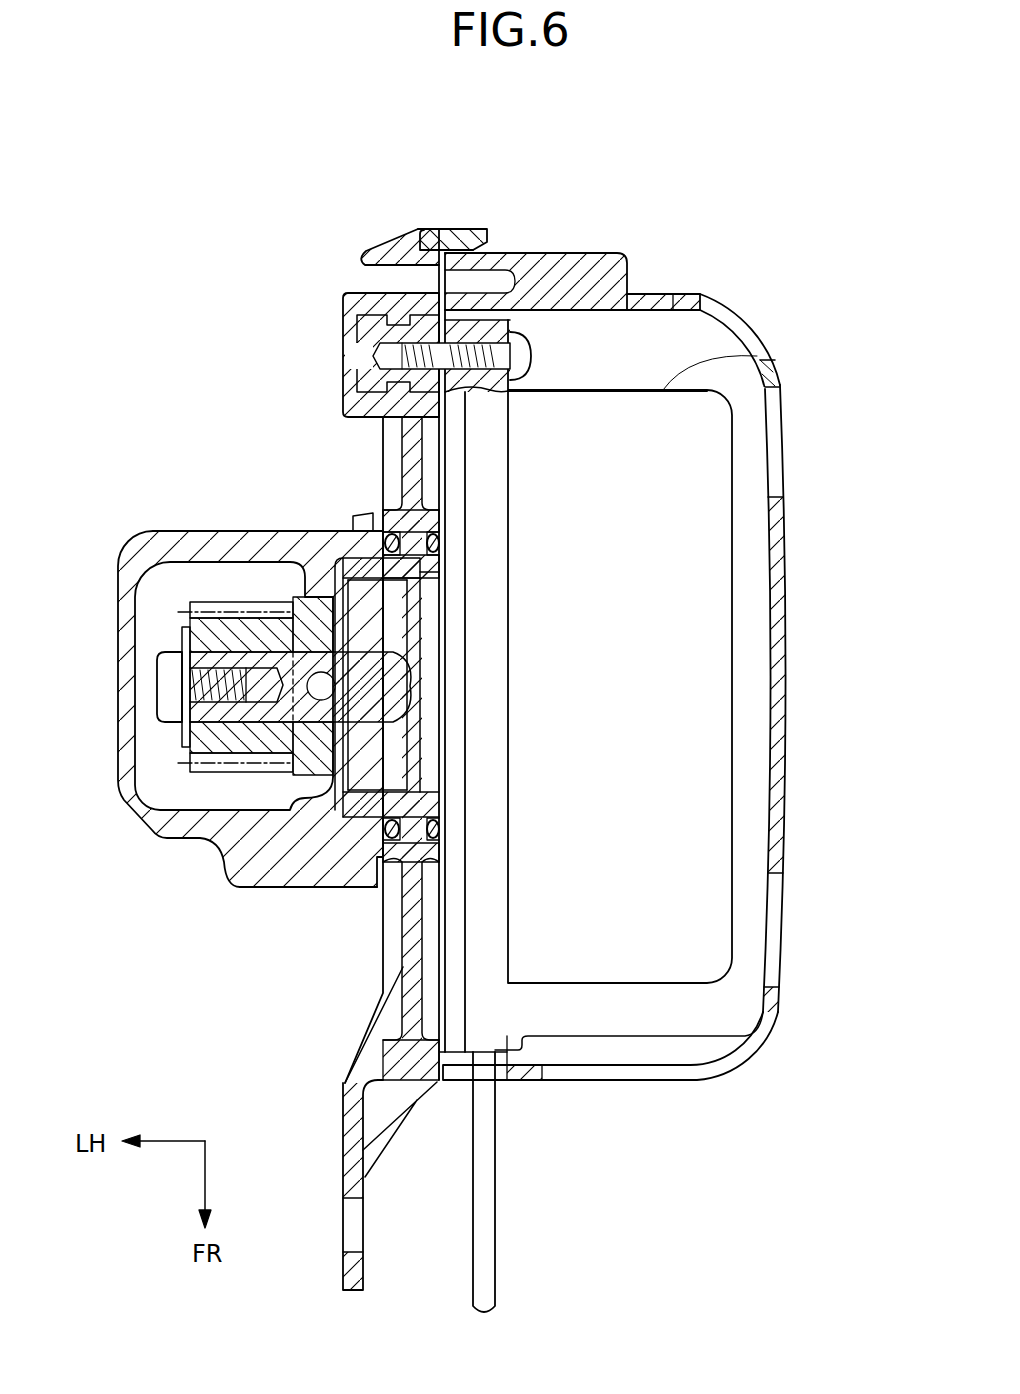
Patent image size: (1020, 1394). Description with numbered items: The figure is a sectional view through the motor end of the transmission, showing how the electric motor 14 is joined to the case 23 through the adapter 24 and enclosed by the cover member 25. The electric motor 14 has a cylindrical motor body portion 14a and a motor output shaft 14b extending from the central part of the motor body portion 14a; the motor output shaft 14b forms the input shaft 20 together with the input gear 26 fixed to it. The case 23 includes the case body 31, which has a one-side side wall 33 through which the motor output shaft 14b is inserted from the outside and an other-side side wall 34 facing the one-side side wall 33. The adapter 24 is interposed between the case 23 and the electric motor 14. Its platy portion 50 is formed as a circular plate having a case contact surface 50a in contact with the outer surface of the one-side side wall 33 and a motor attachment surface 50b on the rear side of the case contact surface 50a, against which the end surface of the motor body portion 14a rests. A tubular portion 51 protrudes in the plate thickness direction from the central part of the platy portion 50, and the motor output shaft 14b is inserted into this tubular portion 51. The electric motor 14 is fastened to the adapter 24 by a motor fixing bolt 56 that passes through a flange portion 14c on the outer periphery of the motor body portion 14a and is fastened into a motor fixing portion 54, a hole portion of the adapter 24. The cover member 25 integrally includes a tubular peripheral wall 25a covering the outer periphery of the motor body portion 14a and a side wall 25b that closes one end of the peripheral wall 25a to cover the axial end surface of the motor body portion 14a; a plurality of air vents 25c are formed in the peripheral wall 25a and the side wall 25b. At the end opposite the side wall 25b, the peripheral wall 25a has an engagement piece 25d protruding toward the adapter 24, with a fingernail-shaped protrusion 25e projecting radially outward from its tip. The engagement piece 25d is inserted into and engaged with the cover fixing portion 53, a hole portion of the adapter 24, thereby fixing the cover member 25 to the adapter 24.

The electric motor 14 is at (536, 602).
The motor body portion 14a is at (757, 357).
The motor output shaft 14b is at (260, 643).
The flange portion 14c is at (505, 255).
The input shaft 20 is at (210, 659).
The case 23 is at (110, 543).
The adapter 24 is at (372, 445).
The cover member 25 is at (678, 618).
The peripheral wall 25a is at (647, 293).
The side wall 25b is at (790, 673).
The air vents 25c is at (708, 303).
The engagement piece 25d is at (363, 252).
The protrusion 25e is at (417, 230).
The input gear 26 is at (178, 588).
The case body 31 is at (108, 652).
The one-side side wall 33 is at (385, 844).
The other-side side wall 34 is at (118, 720).
The platy portion 50 is at (440, 403).
The case contact surface 50a is at (375, 520).
The motor attachment surface 50b is at (445, 477).
The tubular portion 51 is at (325, 540).
The cover fixing portion 53 is at (460, 247).
The motor fixing portion 54 is at (400, 300).
The motor fixing bolt 56 is at (530, 342).